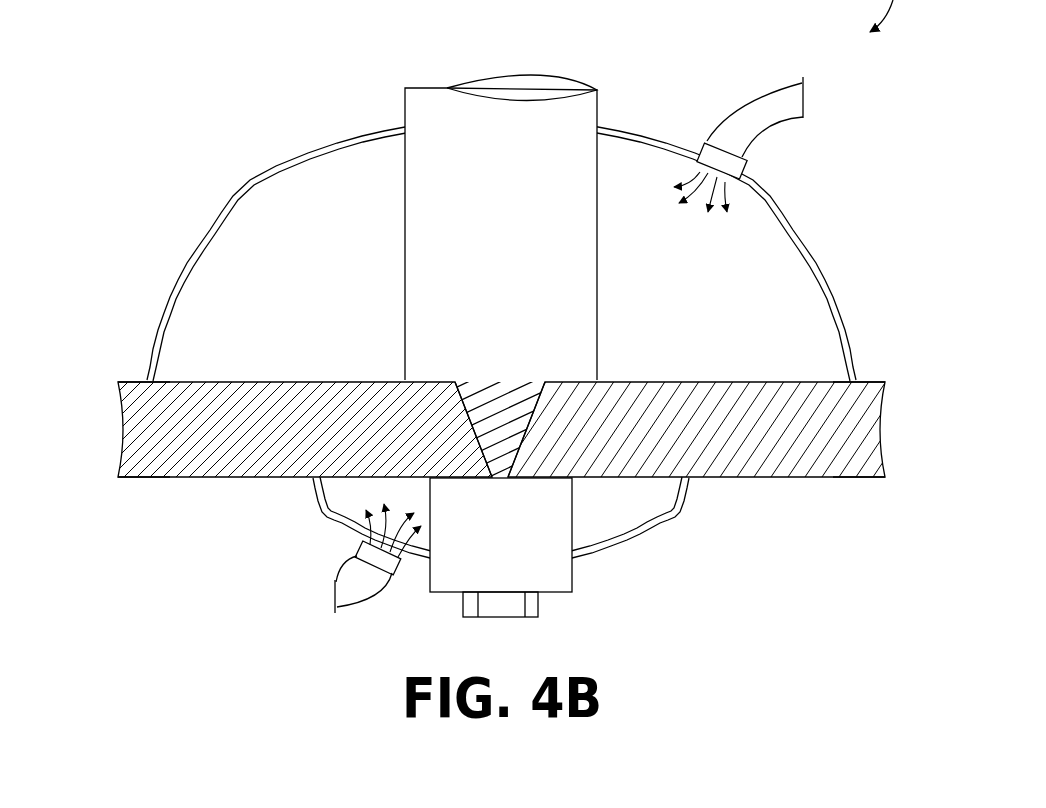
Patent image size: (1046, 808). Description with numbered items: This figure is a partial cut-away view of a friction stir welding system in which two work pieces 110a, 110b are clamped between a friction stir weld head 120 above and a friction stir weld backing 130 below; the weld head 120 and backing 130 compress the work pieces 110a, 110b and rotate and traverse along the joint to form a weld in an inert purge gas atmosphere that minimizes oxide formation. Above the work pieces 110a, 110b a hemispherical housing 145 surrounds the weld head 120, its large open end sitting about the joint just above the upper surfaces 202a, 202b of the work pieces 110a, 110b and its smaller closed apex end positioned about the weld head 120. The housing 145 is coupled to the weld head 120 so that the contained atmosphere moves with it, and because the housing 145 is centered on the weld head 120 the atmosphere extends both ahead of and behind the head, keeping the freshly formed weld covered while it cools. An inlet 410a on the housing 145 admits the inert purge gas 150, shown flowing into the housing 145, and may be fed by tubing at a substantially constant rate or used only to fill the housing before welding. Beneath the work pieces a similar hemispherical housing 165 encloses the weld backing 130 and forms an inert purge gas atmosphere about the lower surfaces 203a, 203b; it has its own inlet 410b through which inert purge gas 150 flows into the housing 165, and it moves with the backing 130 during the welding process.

The friction stir weld head 120 is at (616, 88).
The housing 145 is at (814, 261).
The inlet 410a is at (805, 97).
The inlet 410b is at (332, 597).
The inert purge gas 150 is at (702, 212).
The upper surface 202a is at (120, 381).
The upper surface 202b is at (883, 381).
The work piece 110a is at (117, 433).
The work piece 110b is at (888, 433).
The lower surface 203a is at (120, 478).
The lower surface 203b is at (883, 478).
The housing 165 is at (681, 514).
The friction stir weld backing 130 is at (590, 585).